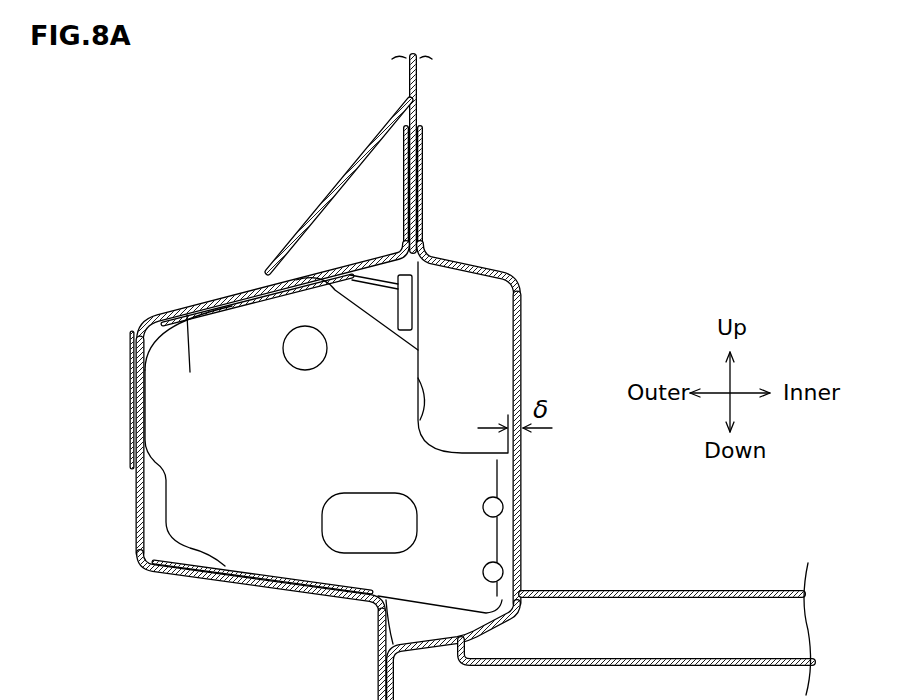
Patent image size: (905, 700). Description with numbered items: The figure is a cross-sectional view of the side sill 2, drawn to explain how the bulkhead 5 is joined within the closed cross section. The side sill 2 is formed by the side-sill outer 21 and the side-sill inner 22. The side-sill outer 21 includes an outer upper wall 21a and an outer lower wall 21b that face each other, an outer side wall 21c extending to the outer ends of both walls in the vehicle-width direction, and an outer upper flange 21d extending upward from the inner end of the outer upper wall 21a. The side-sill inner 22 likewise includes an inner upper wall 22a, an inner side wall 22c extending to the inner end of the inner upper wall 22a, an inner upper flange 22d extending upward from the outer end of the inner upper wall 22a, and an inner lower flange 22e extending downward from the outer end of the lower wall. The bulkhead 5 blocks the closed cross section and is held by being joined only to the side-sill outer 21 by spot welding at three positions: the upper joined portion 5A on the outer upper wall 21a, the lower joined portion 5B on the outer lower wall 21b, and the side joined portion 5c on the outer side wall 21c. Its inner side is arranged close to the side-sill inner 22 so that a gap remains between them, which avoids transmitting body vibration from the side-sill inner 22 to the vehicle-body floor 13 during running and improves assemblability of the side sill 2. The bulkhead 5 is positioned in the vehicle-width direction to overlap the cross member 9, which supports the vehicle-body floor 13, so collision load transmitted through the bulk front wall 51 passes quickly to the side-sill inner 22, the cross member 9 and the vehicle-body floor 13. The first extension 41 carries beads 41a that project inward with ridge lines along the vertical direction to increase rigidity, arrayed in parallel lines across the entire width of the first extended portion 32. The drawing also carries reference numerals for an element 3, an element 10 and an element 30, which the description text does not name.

The side sill 2 is at (233, 414).
The center pillar / plate 3 is at (418, 102).
The bulkhead 5 is at (288, 445).
The upper joined portion 5A is at (201, 290).
The lower joined portion 5B is at (285, 595).
The side joined portion 5c is at (128, 416).
The cross member 9 is at (708, 667).
The vehicle body structure 10 is at (596, 188).
The vehicle-body floor 13 is at (737, 590).
The side-sill outer 21 is at (233, 414).
The outer upper wall 21a is at (340, 268).
The outer lower wall 21b is at (181, 577).
The outer side wall 21c is at (136, 520).
The outer upper flange 21d is at (403, 187).
The side-sill inner 22 is at (462, 414).
The inner upper wall 22a is at (468, 270).
The inner side wall 22c is at (523, 334).
The inner upper flange 22d is at (424, 188).
The inner lower flange 22e is at (410, 651).
The reinforcement brace 30 is at (396, 117).
The first extended portion 32 is at (396, 293).
The first extension 41 is at (463, 429).
The beads 41a is at (428, 393).
The bulk front wall 51 is at (184, 326).